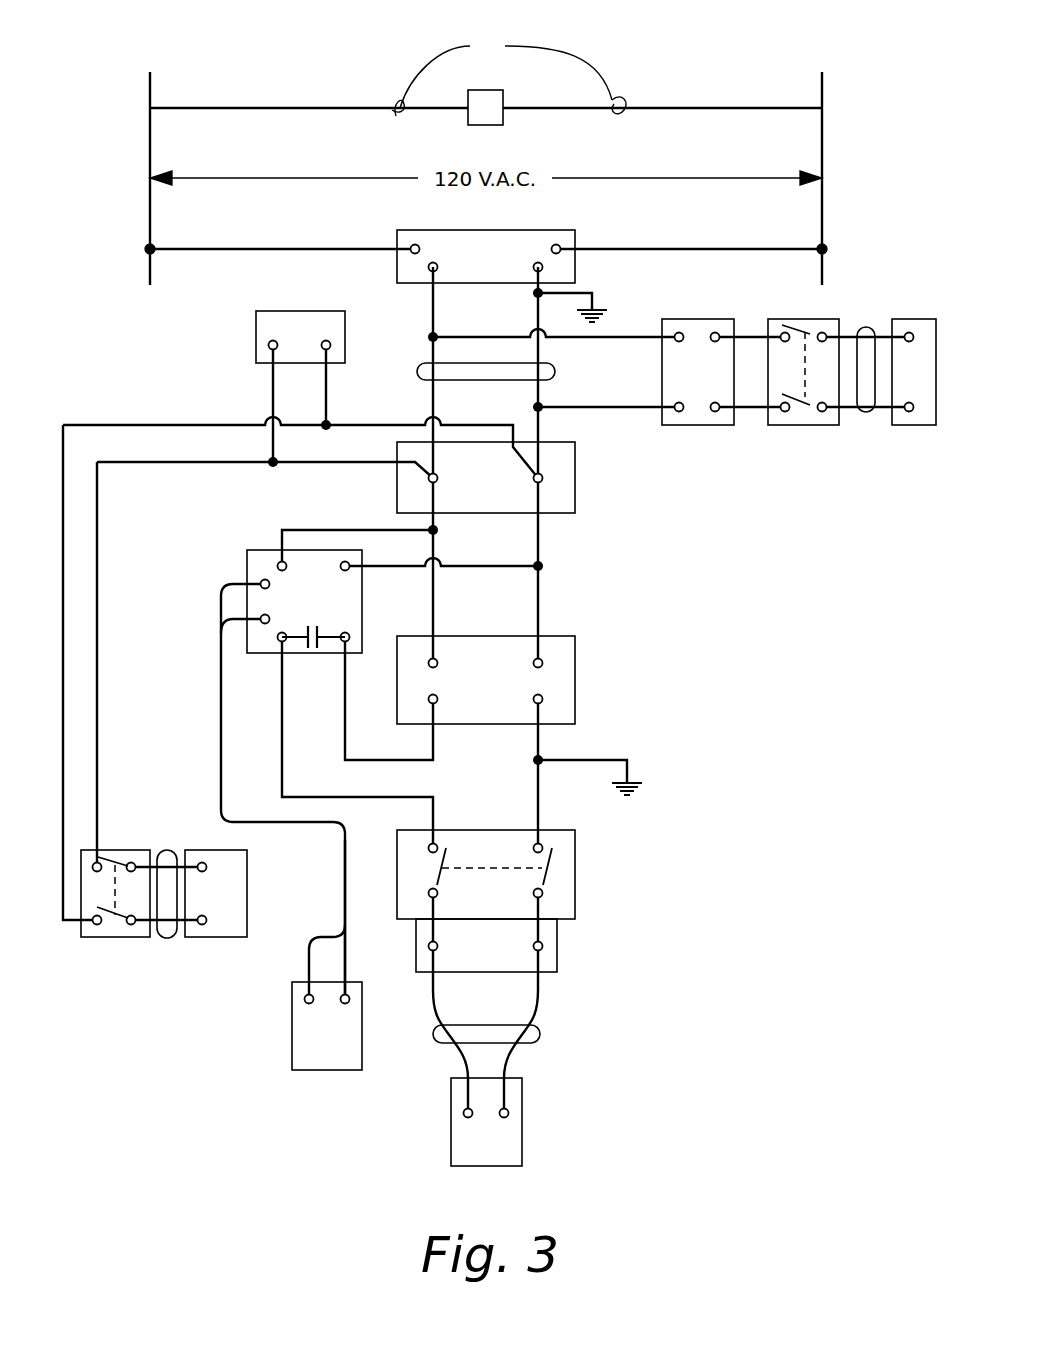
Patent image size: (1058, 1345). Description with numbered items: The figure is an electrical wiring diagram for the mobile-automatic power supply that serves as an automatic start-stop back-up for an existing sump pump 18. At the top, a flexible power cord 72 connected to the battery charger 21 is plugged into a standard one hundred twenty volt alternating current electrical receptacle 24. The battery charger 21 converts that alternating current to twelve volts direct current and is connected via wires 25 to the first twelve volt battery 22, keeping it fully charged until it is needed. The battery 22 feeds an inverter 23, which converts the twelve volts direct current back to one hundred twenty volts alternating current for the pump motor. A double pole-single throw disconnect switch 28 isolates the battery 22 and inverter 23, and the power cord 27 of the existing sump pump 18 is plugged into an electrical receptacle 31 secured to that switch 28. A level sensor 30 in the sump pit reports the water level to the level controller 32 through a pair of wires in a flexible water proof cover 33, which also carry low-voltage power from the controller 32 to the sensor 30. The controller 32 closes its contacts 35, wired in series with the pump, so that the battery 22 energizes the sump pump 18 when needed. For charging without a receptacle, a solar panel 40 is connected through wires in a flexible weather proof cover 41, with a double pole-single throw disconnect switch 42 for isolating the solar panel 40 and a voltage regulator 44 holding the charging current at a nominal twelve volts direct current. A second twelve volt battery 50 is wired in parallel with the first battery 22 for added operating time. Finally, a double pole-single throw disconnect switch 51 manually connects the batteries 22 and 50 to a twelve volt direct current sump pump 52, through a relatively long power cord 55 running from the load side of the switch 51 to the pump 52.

The sump pump 18 is at (522, 1135).
The battery charger 21 is at (548, 230).
The first 12 V.D.C. battery 22 is at (575, 477).
The inverter 23 is at (575, 668).
The electrical receptacle 24 is at (503, 95).
The wires 25 is at (555, 372).
The power cord 27 is at (540, 1034).
The double pole-single throw disconnect switch 28 is at (575, 876).
The level sensor 30 is at (327, 1070).
The electrical receptacle 31 is at (557, 958).
The level controller 32 is at (308, 580).
The wires in flexible water proof cover 33 is at (348, 878).
The contacts 35 is at (317, 628).
The solar panel 40 is at (926, 319).
The wires in flexible weather proof cover 41 is at (866, 412).
The double pole-single throw disconnect switch 42 is at (812, 319).
The voltage regulator 44 is at (692, 319).
The second 12 V.D.C. battery 50 is at (256, 343).
The double pole-single throw disconnect switch 51 is at (121, 850).
The 12 V.D.C. sump pump 52 is at (220, 850).
The power cord 55 is at (167, 938).
The flexible power cord 72 is at (509, 75).